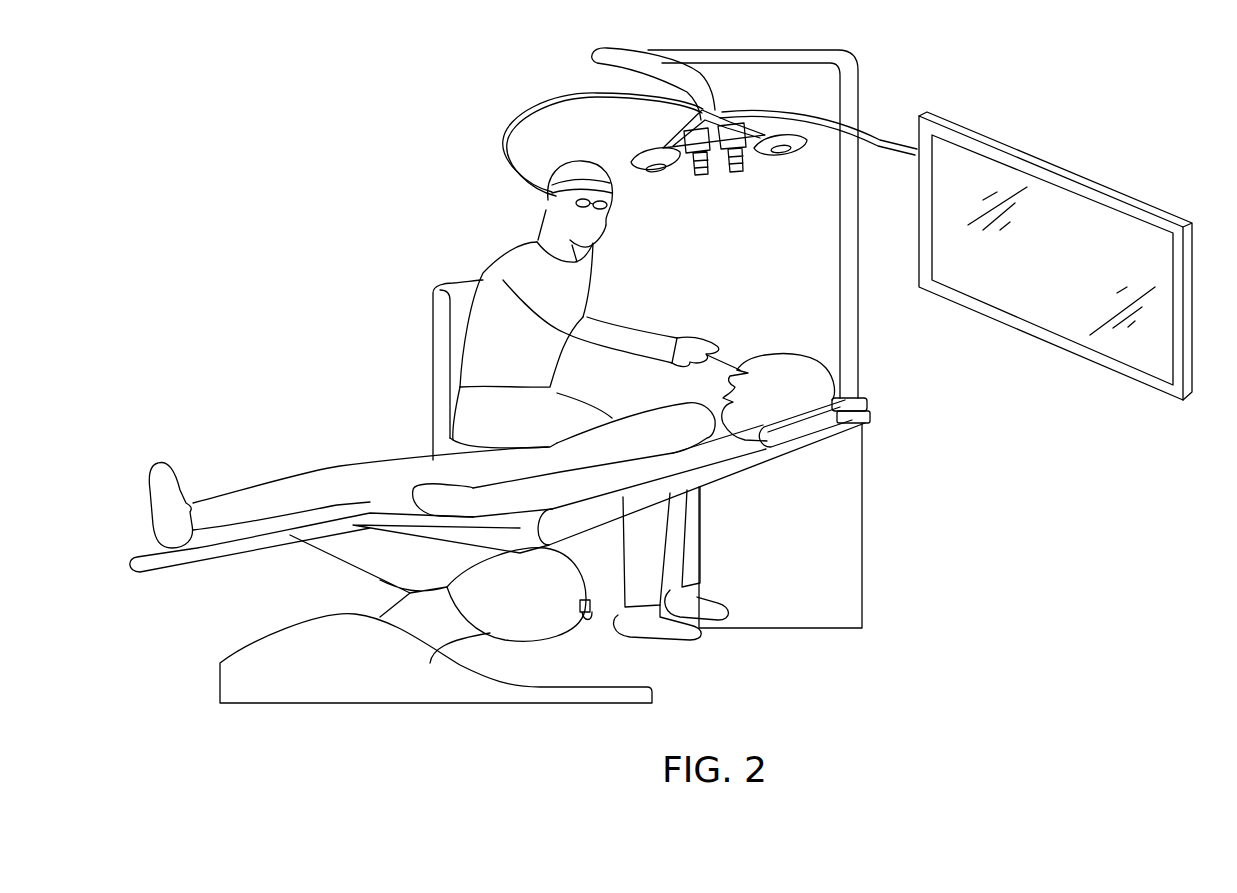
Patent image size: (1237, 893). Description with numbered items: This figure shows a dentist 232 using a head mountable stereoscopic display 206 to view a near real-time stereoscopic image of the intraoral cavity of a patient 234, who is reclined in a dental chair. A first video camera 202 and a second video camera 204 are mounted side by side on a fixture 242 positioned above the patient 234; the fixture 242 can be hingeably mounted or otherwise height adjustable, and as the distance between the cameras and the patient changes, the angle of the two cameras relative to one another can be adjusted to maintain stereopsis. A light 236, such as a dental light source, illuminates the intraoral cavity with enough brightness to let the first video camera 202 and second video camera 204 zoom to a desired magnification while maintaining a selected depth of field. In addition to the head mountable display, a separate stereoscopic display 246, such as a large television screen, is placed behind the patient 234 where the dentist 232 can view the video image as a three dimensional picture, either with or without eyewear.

The first video camera 202 is at (707, 176).
The second video camera 204 is at (742, 172).
The head mountable stereoscopic display 206 is at (612, 209).
The dentist 232 is at (500, 257).
The patient 234 is at (842, 383).
The light 236 is at (632, 160).
The fixture 242 is at (722, 112).
The stereoscopic display 246 is at (953, 128).